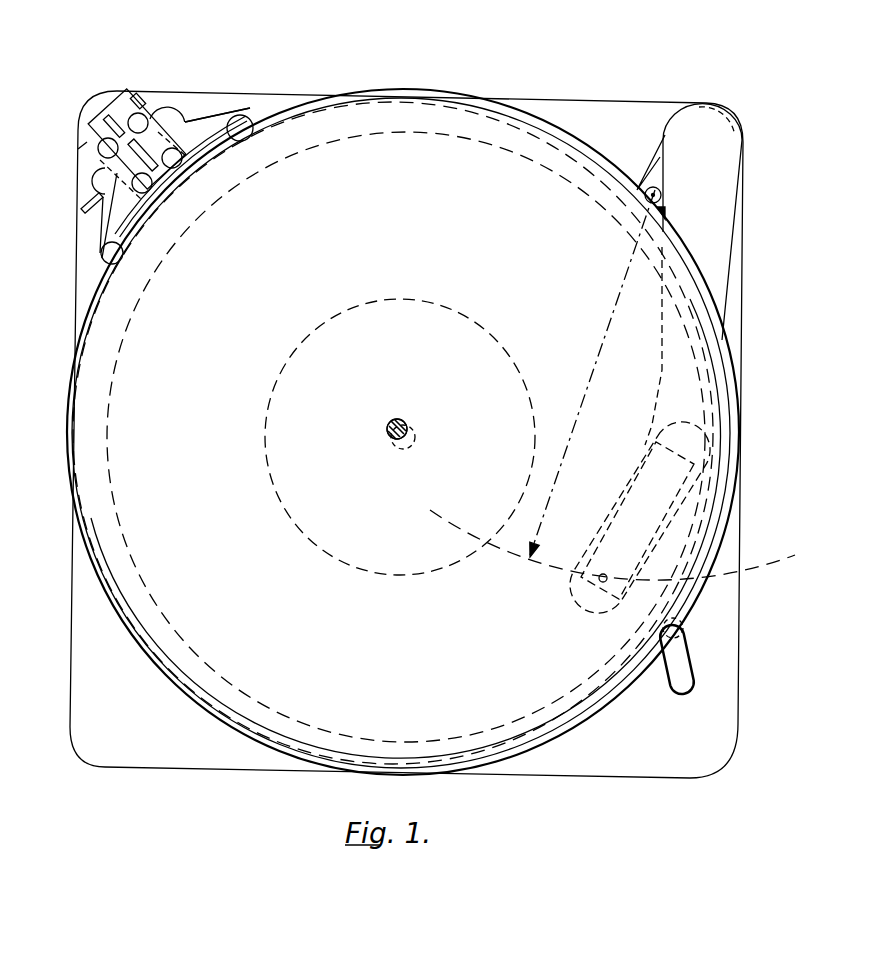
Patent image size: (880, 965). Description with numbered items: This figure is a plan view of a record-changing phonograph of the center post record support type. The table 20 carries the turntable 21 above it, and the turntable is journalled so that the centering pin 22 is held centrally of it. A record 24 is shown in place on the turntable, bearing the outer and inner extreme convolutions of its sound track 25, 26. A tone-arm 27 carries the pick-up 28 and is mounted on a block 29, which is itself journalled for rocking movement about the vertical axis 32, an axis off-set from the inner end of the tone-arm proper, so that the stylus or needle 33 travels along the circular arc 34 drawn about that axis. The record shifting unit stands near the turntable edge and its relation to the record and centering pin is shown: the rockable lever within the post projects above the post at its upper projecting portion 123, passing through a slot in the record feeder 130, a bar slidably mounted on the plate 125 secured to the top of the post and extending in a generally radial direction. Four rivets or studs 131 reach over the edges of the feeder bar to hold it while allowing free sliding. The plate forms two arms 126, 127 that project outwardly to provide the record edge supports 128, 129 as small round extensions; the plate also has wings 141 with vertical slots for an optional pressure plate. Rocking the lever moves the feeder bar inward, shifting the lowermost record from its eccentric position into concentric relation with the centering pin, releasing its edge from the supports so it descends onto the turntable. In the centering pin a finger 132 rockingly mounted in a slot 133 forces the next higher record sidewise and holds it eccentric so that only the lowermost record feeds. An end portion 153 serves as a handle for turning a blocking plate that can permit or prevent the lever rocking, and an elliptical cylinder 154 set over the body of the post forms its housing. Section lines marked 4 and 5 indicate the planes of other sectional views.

The section line 4- 4 is at (115, 102).
The section line 5- 5 is at (730, 112).
The table 20 is at (97, 694).
The turntable 21 is at (213, 673).
The centering pin 22 is at (415, 432).
The record 24 is at (697, 607).
The outer extreme convolution of the sound track 25 is at (598, 683).
The inner extreme convolution of the sound track 26 is at (319, 538).
The tone-arm 27 is at (732, 306).
The pick-up 28 is at (623, 482).
The block 29 is at (655, 163).
The vertical axis 32 is at (661, 195).
The stylus or needle 33 is at (600, 580).
The circular arc 34 is at (612, 401).
The upper projecting portion of the lever 123 is at (193, 115).
The plate 125 is at (258, 67).
The arm 126 is at (113, 220).
The arm 127 is at (223, 123).
The record edge support 128 is at (101, 254).
The record edge support 129 is at (243, 112).
The record feeder 130 is at (128, 150).
The rivets or studs 131 is at (183, 160).
The finger 132 is at (388, 429).
The slot 133 is at (394, 442).
The wings 141 is at (145, 92).
The end portion (handle) 153 is at (82, 203).
The elliptical cylinder 154 is at (88, 181).